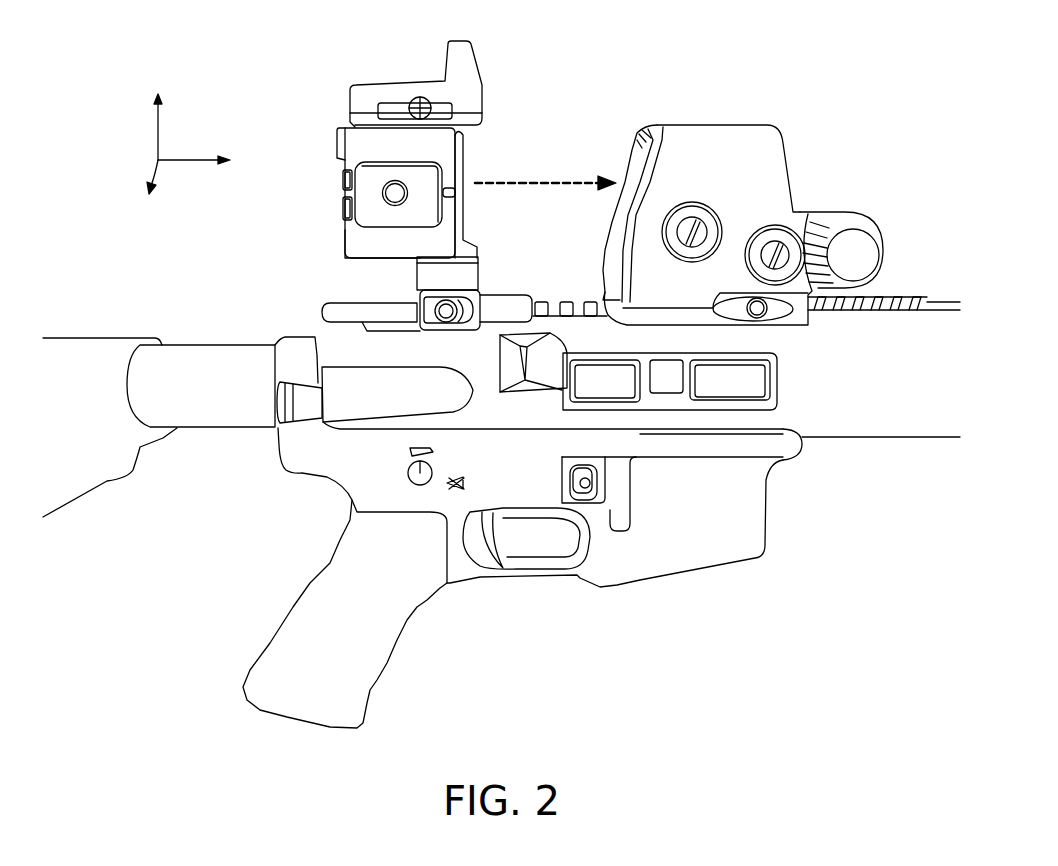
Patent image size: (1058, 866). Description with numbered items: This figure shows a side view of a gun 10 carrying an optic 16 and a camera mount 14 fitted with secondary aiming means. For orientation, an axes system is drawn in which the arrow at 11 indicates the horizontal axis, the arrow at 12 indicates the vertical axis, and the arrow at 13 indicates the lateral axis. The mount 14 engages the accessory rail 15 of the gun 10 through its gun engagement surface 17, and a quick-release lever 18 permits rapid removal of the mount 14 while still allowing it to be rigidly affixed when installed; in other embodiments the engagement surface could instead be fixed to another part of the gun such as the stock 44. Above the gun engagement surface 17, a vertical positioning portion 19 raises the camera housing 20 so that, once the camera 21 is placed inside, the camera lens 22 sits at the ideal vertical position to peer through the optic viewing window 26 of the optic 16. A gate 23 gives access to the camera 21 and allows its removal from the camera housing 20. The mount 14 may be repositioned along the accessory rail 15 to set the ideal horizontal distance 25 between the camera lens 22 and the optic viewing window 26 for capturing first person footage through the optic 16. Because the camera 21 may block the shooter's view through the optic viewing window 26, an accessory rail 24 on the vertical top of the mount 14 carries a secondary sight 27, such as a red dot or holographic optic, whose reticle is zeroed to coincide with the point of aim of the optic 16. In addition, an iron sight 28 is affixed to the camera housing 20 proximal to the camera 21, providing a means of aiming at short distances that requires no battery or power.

The gun 10 is at (318, 362).
The horizontal axis 11 is at (206, 159).
The vertical axis 12 is at (161, 118).
The lateral axis 13 is at (149, 186).
The mount 14 is at (463, 215).
The accessory rail 15 is at (566, 303).
The optic 16 is at (778, 172).
The gun engagement surface 17 is at (425, 307).
The quick-release lever 18 is at (472, 310).
The vertical positioning portion 19 is at (425, 272).
The camera housing 20 is at (347, 232).
The camera 21 is at (362, 193).
The camera lens 22 is at (447, 240).
The gate 23 is at (337, 150).
The accessory rail 24 is at (350, 110).
The horizontal distance 25 is at (574, 177).
The optic viewing window 26 is at (655, 170).
The secondary sight 27 is at (358, 82).
The iron sight 28 is at (343, 217).
The stock 44 is at (232, 362).